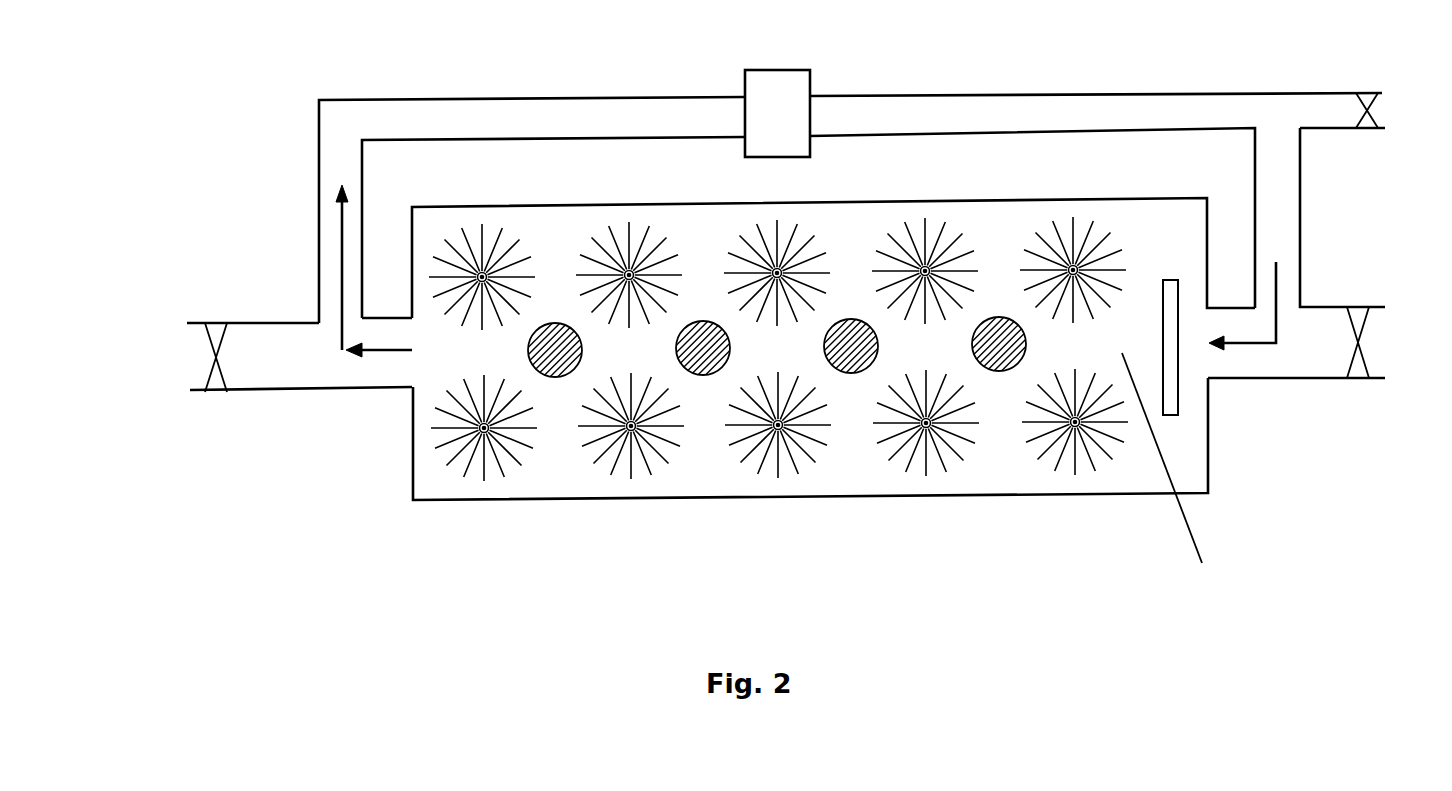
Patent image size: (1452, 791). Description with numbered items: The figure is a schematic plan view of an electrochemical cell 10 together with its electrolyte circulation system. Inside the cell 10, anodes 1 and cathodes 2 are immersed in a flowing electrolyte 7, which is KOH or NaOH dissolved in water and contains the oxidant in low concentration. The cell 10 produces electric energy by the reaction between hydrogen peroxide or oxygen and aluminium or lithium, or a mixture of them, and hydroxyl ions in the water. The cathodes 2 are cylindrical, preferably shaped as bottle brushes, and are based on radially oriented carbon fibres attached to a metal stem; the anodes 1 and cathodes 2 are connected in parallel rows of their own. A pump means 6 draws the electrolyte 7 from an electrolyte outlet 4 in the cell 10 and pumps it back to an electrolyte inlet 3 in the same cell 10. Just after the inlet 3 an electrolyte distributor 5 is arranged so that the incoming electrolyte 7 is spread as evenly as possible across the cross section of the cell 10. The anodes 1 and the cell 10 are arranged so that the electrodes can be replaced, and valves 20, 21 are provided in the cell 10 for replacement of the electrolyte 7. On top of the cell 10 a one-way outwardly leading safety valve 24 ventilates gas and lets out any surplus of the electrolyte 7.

The anode 1 is at (558, 378).
The cathode 2 is at (638, 477).
The electrolyte inlet 3 is at (1262, 310).
The electrolyte outlet 4 is at (354, 278).
The electrolyte distributor 5 is at (1178, 383).
The pump means 6 is at (850, 196).
The electrolyte 7 is at (817, 405).
The cell 10 is at (412, 468).
The valve 20 is at (267, 357).
The valve 21 is at (1323, 342).
The safety valve 24 is at (1369, 196).